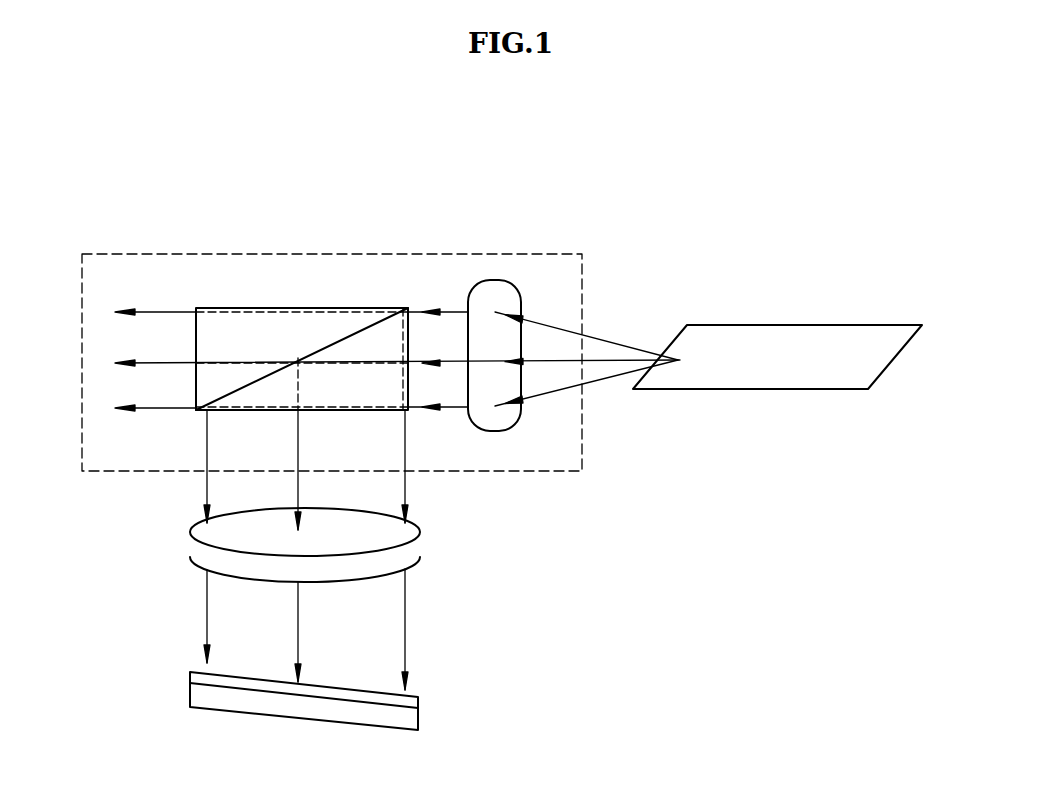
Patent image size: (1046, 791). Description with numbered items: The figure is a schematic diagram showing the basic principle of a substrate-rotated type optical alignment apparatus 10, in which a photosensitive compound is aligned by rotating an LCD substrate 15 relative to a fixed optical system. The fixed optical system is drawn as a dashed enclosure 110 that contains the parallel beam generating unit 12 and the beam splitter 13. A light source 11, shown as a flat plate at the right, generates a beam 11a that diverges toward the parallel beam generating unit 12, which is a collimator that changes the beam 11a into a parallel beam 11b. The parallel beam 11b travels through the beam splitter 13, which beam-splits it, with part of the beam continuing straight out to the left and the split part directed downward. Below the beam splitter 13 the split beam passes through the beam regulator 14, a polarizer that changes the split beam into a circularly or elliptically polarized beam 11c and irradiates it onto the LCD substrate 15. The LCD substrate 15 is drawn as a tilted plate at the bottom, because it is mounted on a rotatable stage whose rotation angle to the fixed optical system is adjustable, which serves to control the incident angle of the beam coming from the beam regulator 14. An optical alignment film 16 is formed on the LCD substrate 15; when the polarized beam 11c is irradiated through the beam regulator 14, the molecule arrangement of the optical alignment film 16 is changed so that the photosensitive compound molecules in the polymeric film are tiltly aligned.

The optical alignment apparatus 10 is at (639, 207).
The optical module 110 is at (540, 472).
The light source 11 is at (845, 327).
The beam 11a is at (604, 340).
The parallel beam 11b is at (448, 410).
The polarized beam 11c is at (407, 630).
The parallel beam generating unit 12 is at (521, 296).
The beam splitter 13 is at (297, 308).
The beam regulator 14 is at (418, 552).
The LCD substrate 15 is at (420, 726).
The optical alignment film 16 is at (420, 700).